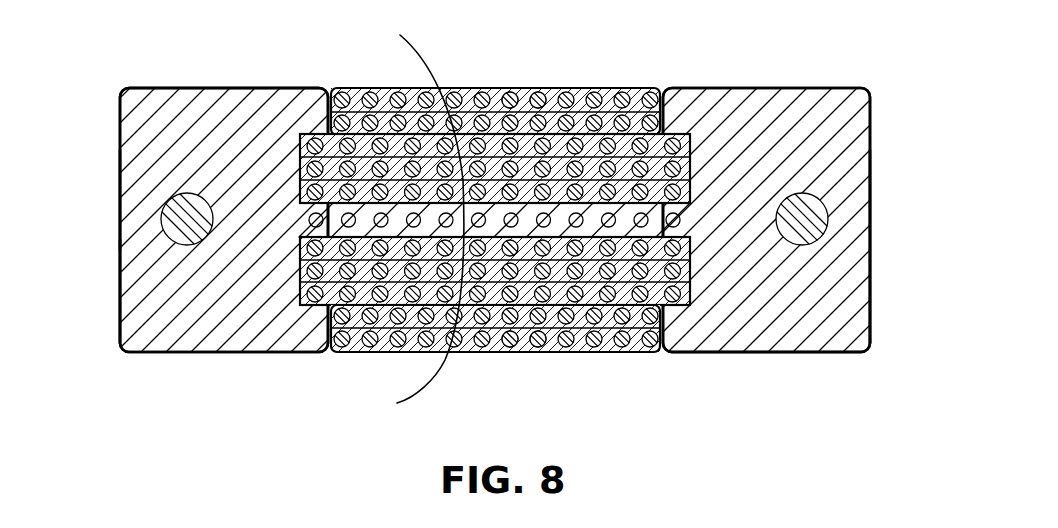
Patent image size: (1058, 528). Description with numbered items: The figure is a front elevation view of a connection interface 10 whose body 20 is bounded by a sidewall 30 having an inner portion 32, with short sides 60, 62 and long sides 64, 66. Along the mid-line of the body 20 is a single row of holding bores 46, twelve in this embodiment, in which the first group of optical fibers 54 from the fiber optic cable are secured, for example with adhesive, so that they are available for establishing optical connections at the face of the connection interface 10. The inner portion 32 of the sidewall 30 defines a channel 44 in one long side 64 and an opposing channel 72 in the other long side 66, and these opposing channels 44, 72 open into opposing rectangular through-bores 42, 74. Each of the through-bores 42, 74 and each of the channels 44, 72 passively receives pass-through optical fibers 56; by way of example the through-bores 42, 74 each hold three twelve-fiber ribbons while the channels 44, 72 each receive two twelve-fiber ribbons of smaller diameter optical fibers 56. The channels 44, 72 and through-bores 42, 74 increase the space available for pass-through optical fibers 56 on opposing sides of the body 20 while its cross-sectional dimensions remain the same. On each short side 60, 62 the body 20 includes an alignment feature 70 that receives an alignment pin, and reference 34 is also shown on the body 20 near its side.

The connection interface 10 is at (805, 50).
The body 20 is at (875, 152).
The sidewall 30 is at (120, 175).
The inner portion 32 is at (414, 220).
The first block outer face 34 is at (120, 201).
The through-bore 42 is at (300, 157).
The channel 44 is at (353, 75).
The holding bores 46 is at (308, 219).
The optical fibers 54 is at (681, 222).
The pass-through optical fibers 56 is at (540, 94).
The short side 60 is at (120, 243).
The short side 62 is at (870, 273).
The long side 64 is at (214, 87).
The long side 66 is at (770, 352).
The alignment feature 70 is at (828, 219).
The channel 72 is at (353, 367).
The through-bore 74 is at (300, 282).